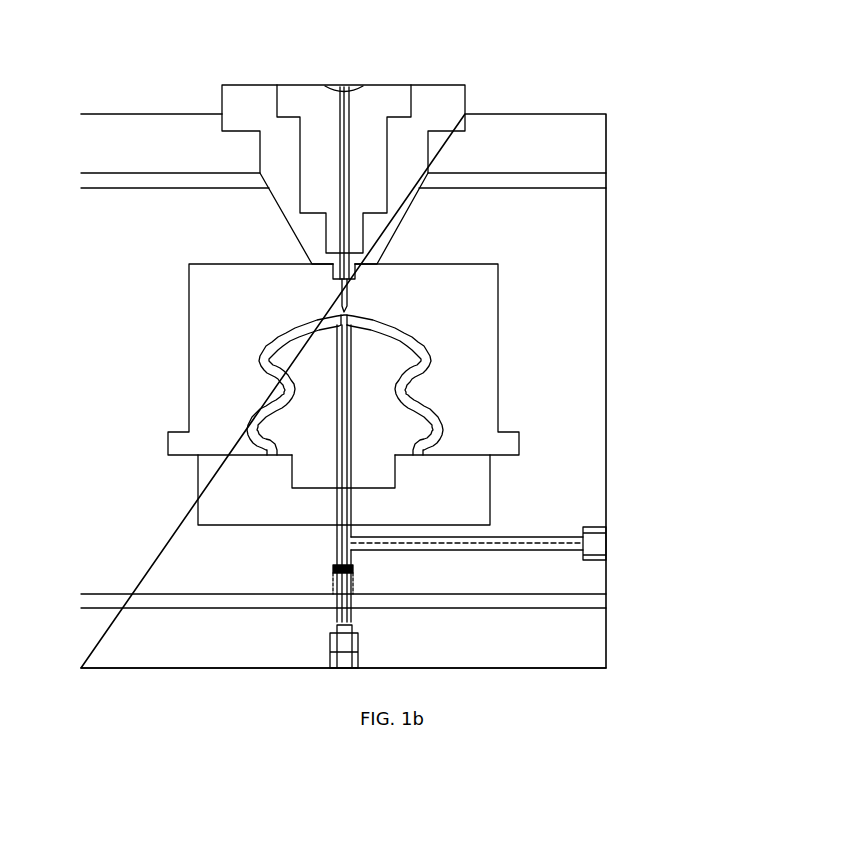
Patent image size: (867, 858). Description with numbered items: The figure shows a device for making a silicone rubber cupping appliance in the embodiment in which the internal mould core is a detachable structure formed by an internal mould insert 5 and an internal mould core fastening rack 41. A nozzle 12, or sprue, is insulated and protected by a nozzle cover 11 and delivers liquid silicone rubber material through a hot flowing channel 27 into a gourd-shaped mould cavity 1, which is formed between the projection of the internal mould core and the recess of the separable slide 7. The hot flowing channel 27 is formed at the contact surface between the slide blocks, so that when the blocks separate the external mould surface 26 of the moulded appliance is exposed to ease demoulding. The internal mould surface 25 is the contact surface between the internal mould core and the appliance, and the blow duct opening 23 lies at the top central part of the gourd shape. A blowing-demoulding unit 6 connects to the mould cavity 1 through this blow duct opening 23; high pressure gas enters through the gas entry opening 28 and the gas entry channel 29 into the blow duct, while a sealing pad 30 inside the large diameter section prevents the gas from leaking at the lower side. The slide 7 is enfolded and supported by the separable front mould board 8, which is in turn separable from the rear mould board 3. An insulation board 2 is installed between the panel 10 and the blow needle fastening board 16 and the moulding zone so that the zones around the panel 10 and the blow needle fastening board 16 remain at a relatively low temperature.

The mould cavity 1 is at (320, 374).
The insulation board 2 is at (582, 180).
The rear mould board 3 is at (588, 577).
The internal mould insert 5 is at (380, 464).
The blowing-demoulding unit 6 is at (352, 411).
The slide 7 is at (467, 325).
The front mould board 8 is at (573, 272).
The panel 10 is at (582, 137).
The nozzle cover 11 is at (447, 115).
The nozzle 12 is at (372, 100).
The blow needle fastening board 16 is at (577, 647).
The blow duct opening 23 is at (342, 322).
The internal mould surface 25 is at (260, 415).
The external mould surface 26 is at (282, 328).
The hot flowing channel 27 is at (348, 301).
The gas entry opening 28 is at (607, 540).
The gas entry channel 29 is at (520, 535).
The sealing pad 30 is at (335, 571).
The internal mould core fastening rack 41 is at (358, 480).